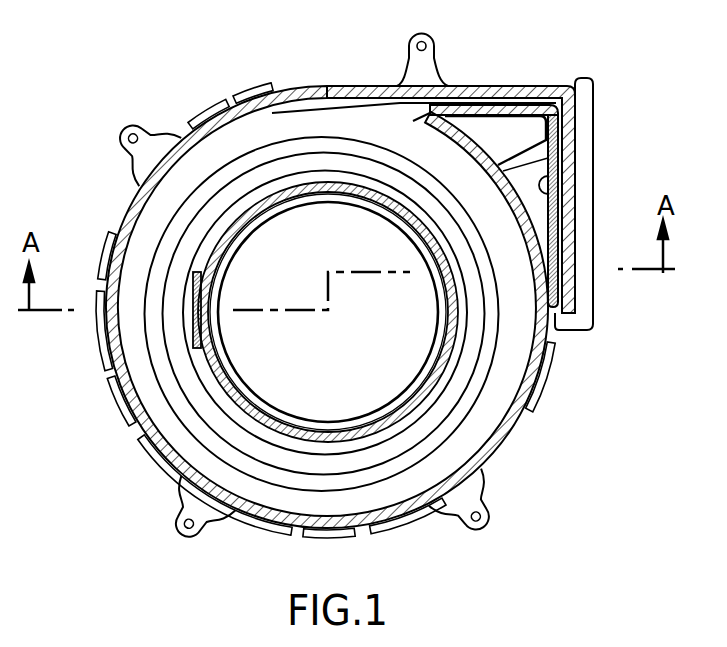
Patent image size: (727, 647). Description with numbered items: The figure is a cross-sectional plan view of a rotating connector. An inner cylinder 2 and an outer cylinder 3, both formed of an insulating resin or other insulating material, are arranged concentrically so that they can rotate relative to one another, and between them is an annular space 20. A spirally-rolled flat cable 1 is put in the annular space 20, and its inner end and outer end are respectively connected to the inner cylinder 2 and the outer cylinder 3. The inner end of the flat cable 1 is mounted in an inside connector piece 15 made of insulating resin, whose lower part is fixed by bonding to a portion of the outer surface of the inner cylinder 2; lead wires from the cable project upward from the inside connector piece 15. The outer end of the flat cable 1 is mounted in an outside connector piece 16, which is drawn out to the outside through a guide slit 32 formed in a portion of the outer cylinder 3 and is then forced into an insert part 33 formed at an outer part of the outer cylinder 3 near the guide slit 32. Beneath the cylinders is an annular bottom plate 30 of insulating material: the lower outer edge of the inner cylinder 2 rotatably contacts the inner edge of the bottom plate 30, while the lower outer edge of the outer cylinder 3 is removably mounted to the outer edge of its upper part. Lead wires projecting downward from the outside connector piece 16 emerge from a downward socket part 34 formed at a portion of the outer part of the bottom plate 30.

The flat cable 1 is at (202, 227).
The inner cylinder 2 is at (374, 195).
The outer cylinder 3 is at (195, 128).
The inside connector piece 15 is at (193, 313).
The outside connector piece 16 is at (558, 197).
The annular space 20 is at (300, 127).
The bottom plate 30 is at (152, 466).
The guide slit 32 is at (410, 122).
The insert part 33 is at (573, 118).
The downward socket part 34 is at (593, 303).